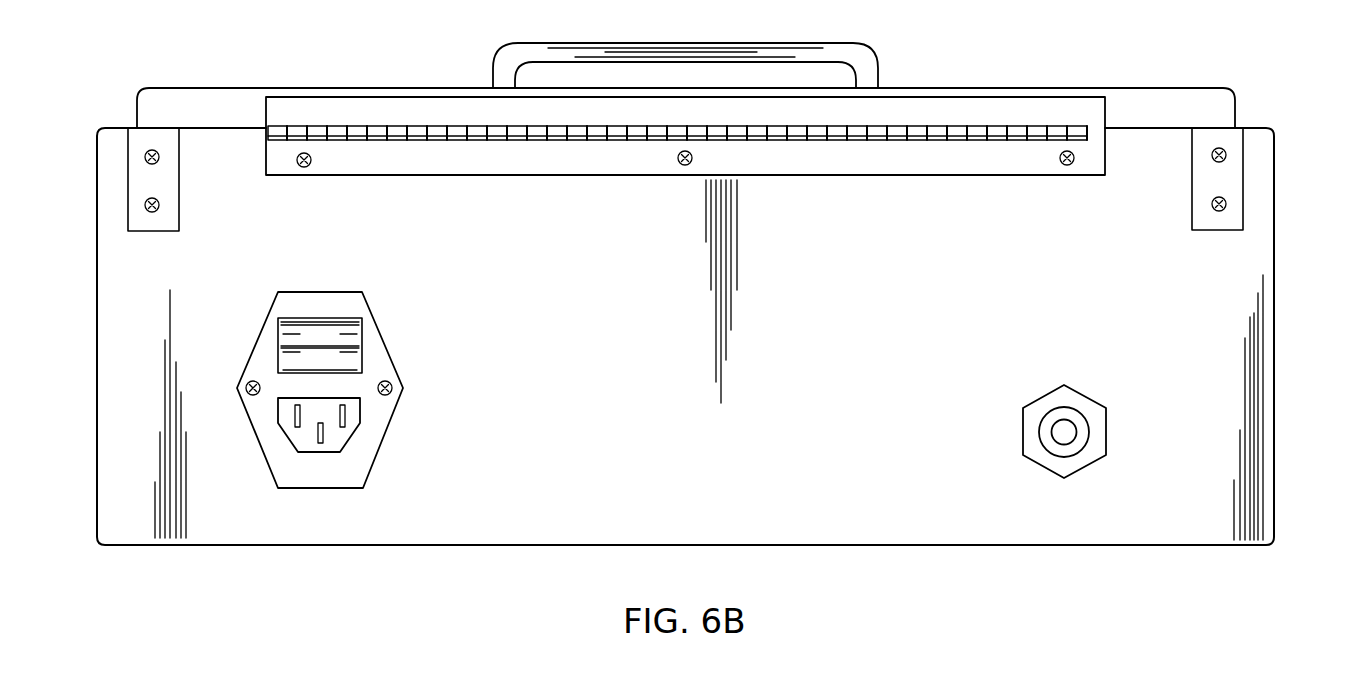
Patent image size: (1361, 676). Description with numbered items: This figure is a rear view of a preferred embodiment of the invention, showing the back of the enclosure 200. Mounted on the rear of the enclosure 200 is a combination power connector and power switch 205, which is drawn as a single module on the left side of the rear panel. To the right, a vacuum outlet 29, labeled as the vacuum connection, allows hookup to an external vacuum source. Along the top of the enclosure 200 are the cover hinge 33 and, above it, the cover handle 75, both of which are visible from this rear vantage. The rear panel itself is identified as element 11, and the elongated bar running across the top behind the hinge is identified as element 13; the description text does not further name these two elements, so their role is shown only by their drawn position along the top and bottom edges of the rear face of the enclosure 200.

The base panel / housing body 11 is at (1167, 547).
The top bar 13 is at (1205, 88).
The vacuum outlet 29 is at (1085, 467).
The cover hinge 33 is at (1048, 100).
The cover handle 75 is at (866, 57).
The enclosure 200 is at (1282, 570).
The combination power connector and power switch 205 is at (358, 447).